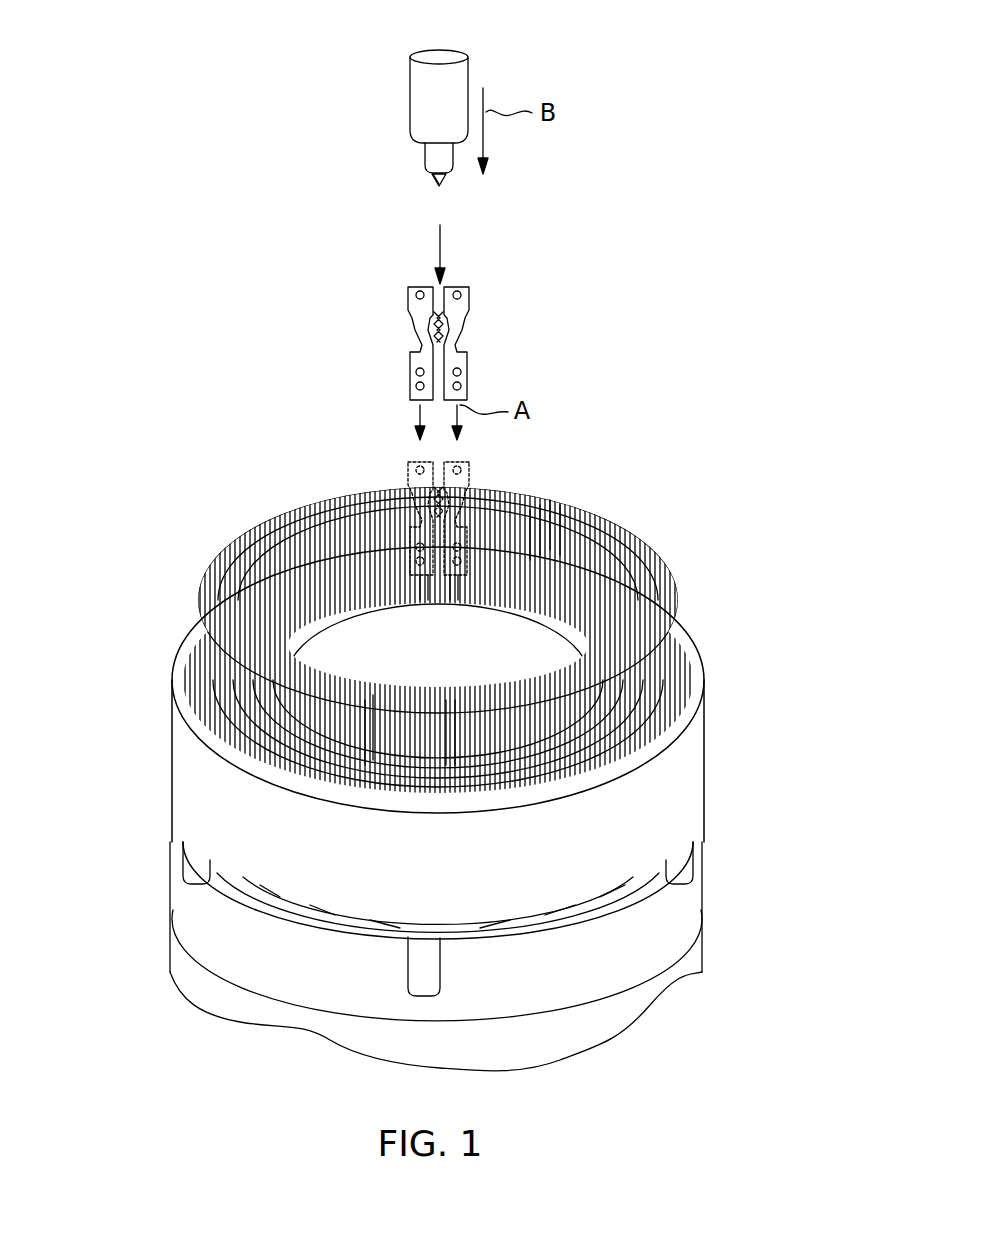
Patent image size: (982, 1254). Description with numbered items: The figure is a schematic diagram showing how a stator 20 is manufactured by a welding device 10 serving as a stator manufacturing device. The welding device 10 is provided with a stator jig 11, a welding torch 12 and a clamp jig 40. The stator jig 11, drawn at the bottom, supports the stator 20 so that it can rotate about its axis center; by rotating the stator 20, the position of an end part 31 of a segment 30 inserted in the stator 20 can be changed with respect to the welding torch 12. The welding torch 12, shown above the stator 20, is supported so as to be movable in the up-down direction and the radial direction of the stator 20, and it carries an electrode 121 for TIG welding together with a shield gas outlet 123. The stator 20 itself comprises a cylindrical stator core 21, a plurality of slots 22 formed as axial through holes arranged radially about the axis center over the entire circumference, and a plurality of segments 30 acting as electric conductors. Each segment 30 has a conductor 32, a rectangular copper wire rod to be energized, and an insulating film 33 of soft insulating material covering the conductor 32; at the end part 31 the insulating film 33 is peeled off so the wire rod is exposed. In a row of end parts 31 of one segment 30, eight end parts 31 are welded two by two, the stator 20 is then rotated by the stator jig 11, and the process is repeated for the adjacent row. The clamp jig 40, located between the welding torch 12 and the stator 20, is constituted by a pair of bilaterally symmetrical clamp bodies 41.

The welding device 10 is at (292, 72).
The stator jig 11 is at (172, 915).
The welding torch 12 is at (410, 105).
The electrode 121 is at (442, 186).
The shield gas outlet 123 is at (433, 178).
The stator 20 is at (472, 771).
The stator core 21 is at (704, 757).
The slots 22 is at (452, 580).
The segment 30 is at (443, 659).
The end part 31 is at (566, 510).
The conductor 32 is at (472, 770).
The insulating film 33 is at (397, 770).
The clamp jig 40 is at (450, 401).
The clamp bodies 41 is at (408, 320).